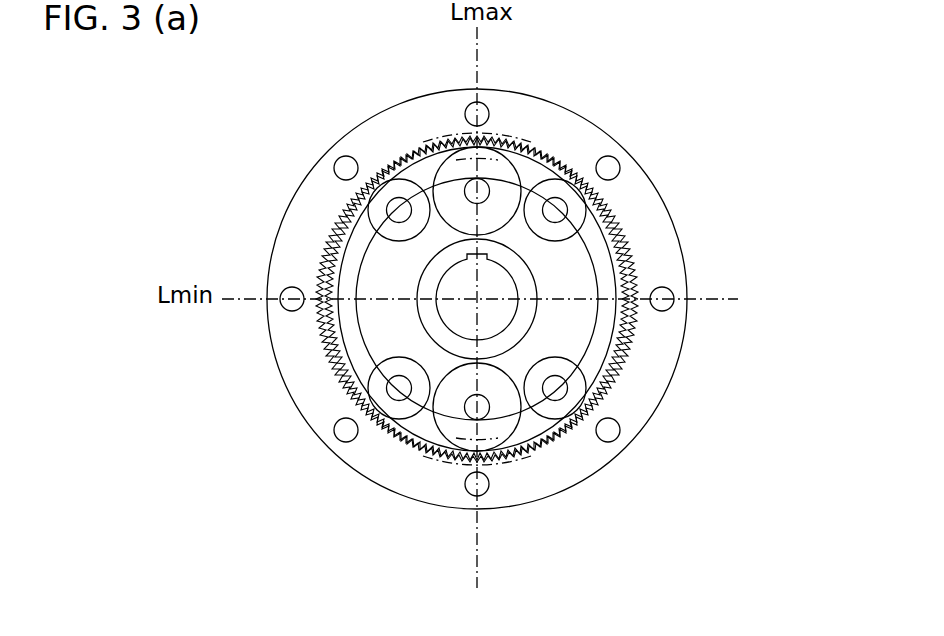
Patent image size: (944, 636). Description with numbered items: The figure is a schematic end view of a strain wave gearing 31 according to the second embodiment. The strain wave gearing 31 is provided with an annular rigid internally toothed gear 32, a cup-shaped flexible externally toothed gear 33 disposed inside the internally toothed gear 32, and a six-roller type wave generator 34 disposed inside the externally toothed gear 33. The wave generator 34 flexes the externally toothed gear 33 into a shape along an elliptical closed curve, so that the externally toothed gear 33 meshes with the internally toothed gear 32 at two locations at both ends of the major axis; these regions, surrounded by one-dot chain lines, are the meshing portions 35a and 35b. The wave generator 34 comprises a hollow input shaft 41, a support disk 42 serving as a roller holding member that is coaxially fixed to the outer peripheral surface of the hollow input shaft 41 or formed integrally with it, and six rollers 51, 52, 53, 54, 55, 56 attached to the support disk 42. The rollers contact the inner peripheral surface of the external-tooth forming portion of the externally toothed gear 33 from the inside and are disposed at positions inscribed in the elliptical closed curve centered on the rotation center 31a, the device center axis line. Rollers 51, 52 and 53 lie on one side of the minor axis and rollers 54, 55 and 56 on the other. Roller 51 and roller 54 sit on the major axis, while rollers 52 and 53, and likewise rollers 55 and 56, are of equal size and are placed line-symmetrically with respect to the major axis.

The strain wave gearing 31 is at (655, 106).
The rotation center 31a is at (473, 302).
The rigid internally toothed gear 32 is at (584, 133).
The flexible externally toothed gear 33 is at (624, 259).
The wave generator 34 is at (597, 360).
The meshing portion 35a is at (502, 125).
The meshing portion 35b is at (502, 488).
The hollow input shaft 41 is at (537, 323).
The support disk 42 is at (593, 317).
The roller 51 is at (436, 168).
The roller 52 is at (385, 192).
The roller 53 is at (556, 181).
The roller 54 is at (503, 415).
The roller 55 is at (537, 397).
The roller 56 is at (402, 420).